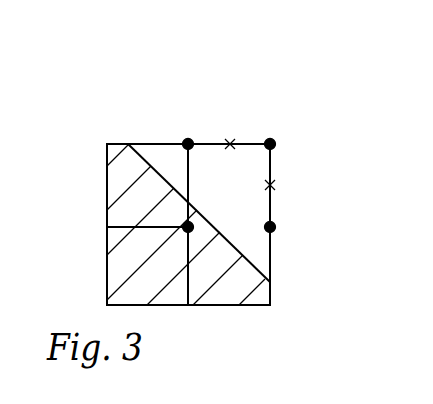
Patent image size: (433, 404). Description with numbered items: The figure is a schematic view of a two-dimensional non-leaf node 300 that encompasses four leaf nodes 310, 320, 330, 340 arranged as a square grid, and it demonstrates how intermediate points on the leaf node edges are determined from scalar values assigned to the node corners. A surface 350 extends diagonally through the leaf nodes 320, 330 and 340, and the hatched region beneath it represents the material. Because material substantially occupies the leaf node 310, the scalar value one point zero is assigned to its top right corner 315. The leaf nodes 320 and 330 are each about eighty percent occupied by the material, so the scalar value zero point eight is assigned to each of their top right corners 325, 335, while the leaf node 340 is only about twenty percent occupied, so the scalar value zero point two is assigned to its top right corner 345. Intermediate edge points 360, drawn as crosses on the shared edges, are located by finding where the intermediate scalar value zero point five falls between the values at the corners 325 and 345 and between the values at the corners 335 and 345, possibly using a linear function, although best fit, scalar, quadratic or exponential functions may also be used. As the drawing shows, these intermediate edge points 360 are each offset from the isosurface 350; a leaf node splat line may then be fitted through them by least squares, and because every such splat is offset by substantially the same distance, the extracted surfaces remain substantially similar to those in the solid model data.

The non-leaf node 300 is at (88, 89).
The leaf node 310 is at (113, 275).
The top right corner of leaf node 310 315 is at (198, 233).
The leaf node 320 is at (263, 293).
The top right corner of leaf node 320 325 is at (276, 232).
The leaf node 330 is at (113, 183).
The top right corner of leaf node 330 335 is at (182, 140).
The leaf node 340 is at (262, 207).
The top right corner of leaf node 340 345 is at (276, 140).
The surface 350 is at (167, 181).
The intermediate edge points 360 is at (229, 136).